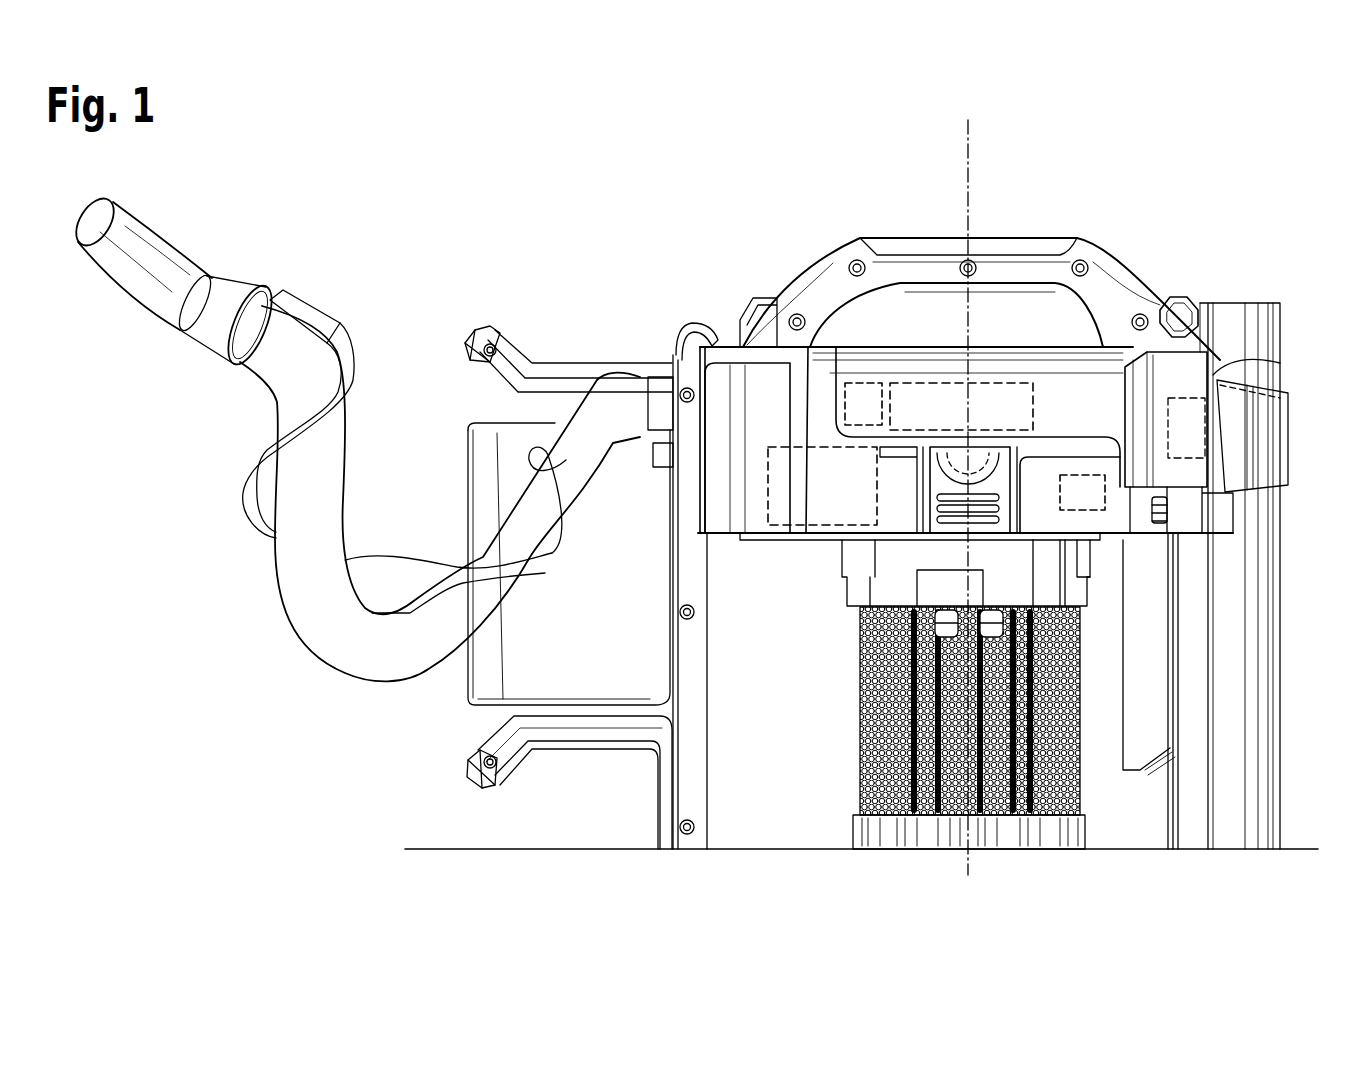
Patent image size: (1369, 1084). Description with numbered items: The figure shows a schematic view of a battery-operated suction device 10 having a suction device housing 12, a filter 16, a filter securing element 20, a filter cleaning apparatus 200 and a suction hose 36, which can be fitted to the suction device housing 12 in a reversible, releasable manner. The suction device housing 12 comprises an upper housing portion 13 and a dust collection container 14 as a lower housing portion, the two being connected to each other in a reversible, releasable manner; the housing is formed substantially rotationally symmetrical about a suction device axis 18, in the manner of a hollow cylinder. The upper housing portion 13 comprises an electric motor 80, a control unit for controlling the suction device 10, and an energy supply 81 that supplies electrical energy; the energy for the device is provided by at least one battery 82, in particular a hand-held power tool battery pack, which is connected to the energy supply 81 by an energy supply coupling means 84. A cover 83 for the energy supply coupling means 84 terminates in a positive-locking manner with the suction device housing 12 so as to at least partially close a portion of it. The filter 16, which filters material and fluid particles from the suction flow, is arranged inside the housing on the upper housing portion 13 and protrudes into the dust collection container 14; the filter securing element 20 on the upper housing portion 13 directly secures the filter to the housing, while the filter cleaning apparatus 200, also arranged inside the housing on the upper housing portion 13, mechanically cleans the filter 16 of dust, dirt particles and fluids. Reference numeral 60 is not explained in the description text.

The suction device 10 is at (1199, 239).
The suction device housing 12 is at (1233, 431).
The upper housing portion 13 is at (722, 393).
The dust collection container 14 is at (1128, 793).
The filter 16 is at (866, 773).
The suction device axis 18 is at (972, 143).
The filter securing element 20 is at (1068, 580).
The suction hose 36 is at (313, 623).
The control panel 60 is at (1037, 437).
The electric motor 80 is at (1082, 475).
The energy supply 81 is at (948, 383).
The battery 82 is at (1298, 420).
The cover 83 is at (1197, 368).
The energy supply coupling means 84 is at (875, 383).
The filter cleaning apparatus 200 is at (784, 446).